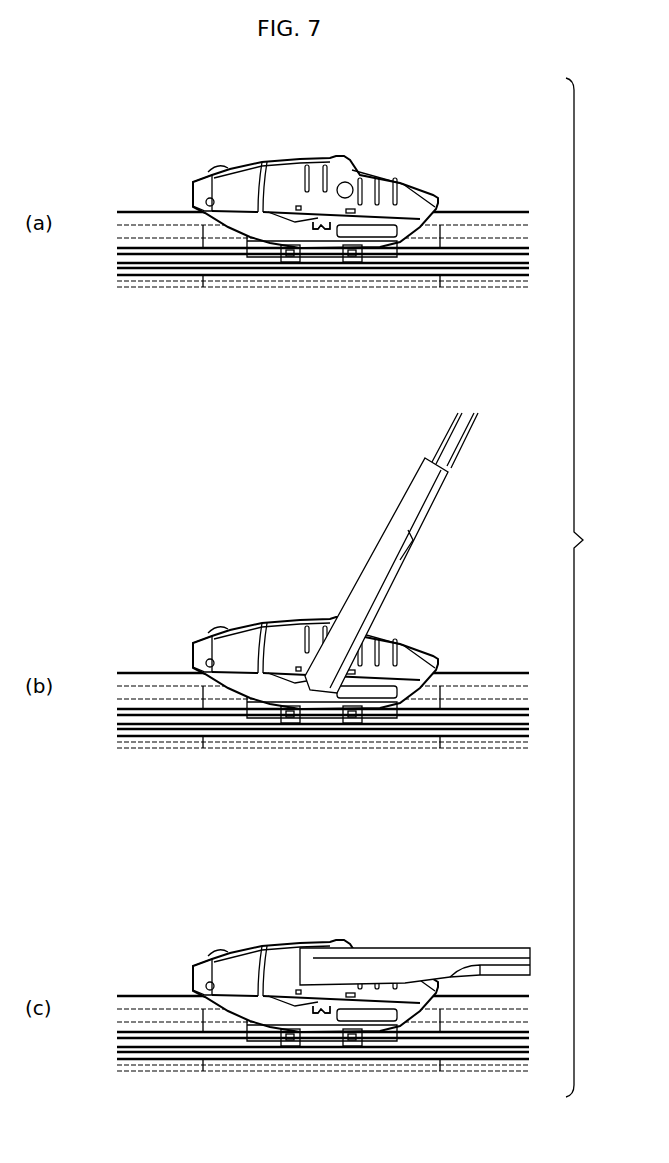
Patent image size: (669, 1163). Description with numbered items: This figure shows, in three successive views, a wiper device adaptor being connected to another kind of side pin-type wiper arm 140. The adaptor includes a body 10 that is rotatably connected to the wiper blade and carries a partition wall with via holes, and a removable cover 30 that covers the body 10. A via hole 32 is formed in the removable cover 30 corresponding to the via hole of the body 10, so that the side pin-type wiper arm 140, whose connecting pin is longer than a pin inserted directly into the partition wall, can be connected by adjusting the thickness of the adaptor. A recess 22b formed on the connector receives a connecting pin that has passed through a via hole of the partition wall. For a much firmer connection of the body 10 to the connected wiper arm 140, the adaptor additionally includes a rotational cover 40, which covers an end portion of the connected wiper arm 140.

The removable cover 30 is at (313, 161).
The via hole 32 is at (351, 180).
The rotational cover 40 is at (196, 186).
The body 10 is at (264, 220).
The recess 22b is at (343, 200).
The side pin-type wiper arm 140 is at (432, 488).